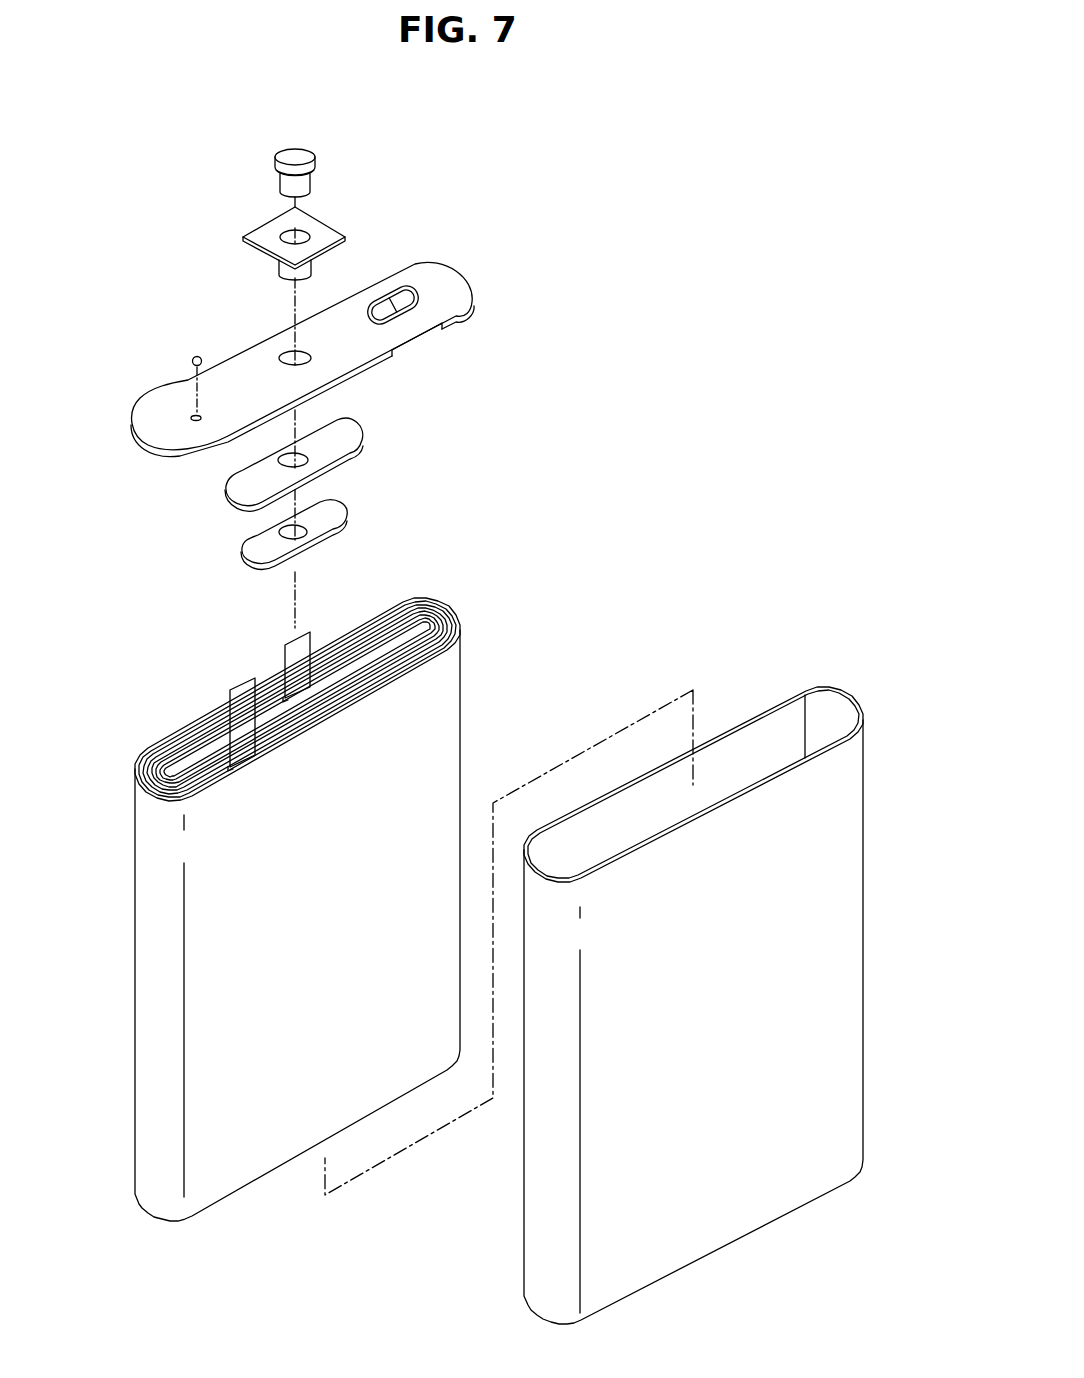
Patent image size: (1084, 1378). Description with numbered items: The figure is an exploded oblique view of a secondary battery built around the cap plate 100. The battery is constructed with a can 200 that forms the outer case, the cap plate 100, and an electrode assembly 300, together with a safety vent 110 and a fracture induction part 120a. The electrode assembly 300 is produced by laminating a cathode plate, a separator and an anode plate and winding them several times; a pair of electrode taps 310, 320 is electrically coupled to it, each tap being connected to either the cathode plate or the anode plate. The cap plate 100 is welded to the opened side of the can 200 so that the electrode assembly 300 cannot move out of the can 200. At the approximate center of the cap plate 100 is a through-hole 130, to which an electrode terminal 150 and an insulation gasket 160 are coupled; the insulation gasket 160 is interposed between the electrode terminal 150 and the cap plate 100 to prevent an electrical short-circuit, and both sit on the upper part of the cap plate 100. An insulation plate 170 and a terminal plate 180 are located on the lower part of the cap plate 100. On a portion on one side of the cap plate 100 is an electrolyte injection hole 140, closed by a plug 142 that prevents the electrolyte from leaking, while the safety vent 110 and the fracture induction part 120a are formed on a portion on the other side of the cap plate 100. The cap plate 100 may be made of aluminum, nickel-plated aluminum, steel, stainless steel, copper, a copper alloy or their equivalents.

The cap plate 100 is at (297, 327).
The safety vent 110 is at (394, 296).
The fracture induction part 120a is at (418, 338).
The through-hole 130 is at (278, 357).
The electrolyte injection hole 140 is at (193, 416).
The plug 142 is at (192, 356).
The electrode terminal 150 is at (298, 146).
The insulation gasket 160 is at (270, 231).
The insulation plate 170 is at (343, 437).
The terminal plate 180 is at (327, 513).
The can 200 is at (853, 875).
The electrode assembly 300 is at (259, 897).
The electrode tap 310 is at (307, 643).
The electrode tap 320 is at (245, 690).